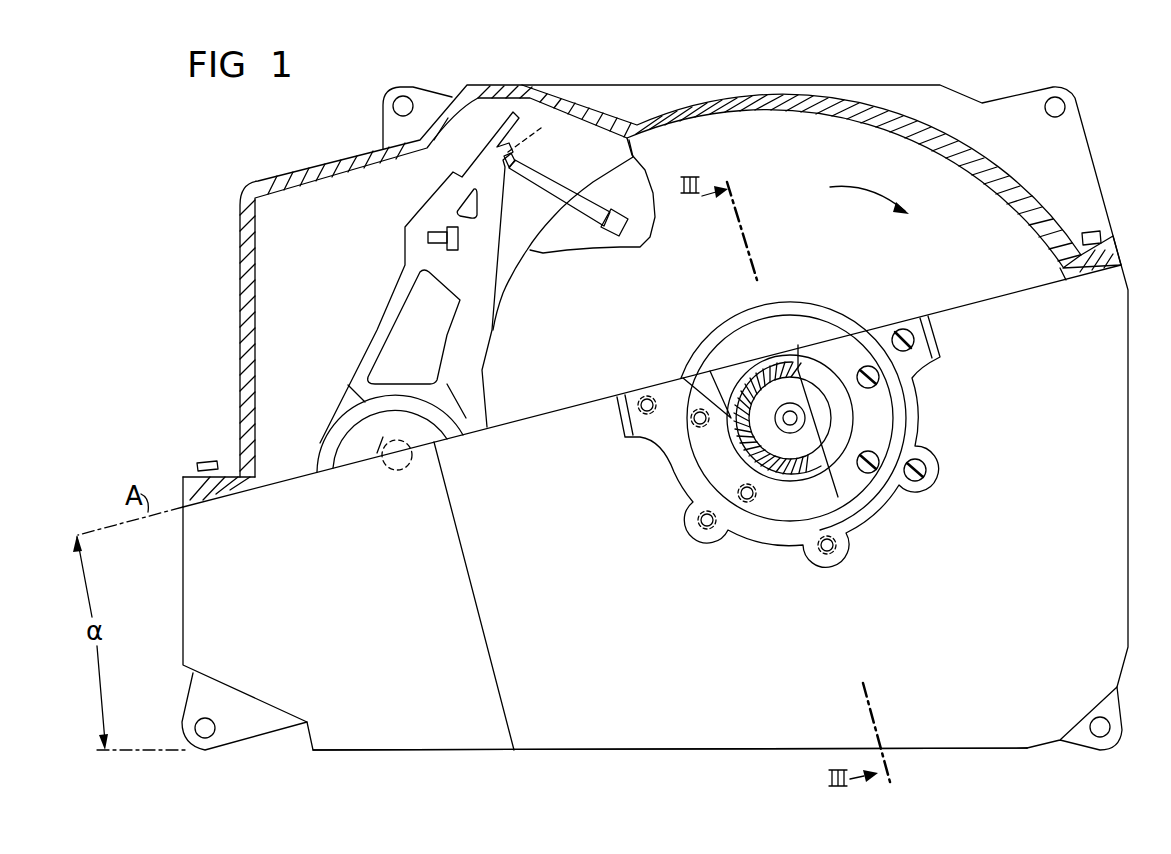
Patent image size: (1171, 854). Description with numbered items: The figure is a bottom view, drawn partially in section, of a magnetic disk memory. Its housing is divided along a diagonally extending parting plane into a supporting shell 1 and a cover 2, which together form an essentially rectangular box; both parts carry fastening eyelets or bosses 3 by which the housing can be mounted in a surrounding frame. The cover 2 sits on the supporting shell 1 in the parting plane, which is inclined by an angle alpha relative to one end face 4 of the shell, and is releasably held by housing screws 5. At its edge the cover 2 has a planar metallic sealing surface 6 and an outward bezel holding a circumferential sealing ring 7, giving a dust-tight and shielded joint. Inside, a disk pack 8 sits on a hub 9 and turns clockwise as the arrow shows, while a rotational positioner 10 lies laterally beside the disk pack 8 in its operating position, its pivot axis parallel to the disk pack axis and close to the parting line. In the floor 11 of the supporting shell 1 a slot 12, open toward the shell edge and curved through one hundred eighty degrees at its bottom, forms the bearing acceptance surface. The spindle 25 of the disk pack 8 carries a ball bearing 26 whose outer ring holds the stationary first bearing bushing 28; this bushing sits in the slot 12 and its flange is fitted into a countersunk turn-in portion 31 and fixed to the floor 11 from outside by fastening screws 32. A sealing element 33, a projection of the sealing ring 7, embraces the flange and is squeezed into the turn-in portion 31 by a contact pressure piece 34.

The supporting shell 1 is at (180, 563).
The cover 2 is at (242, 372).
The fastening eyelets or bosses 3 is at (392, 117).
The end face 4 is at (453, 752).
The housing screws 5 is at (213, 462).
The planar metallic sealing surface 6 is at (1080, 267).
The circumferential sealing ring 7 is at (1113, 253).
The disk pack 8 is at (830, 130).
The hub 9 is at (822, 302).
The rotational positioner 10 is at (383, 317).
The floor of the supporting shell 11 is at (218, 608).
The slot 12 is at (723, 377).
The spindle 25 is at (782, 427).
The ball bearing 26 is at (800, 450).
The first bearing bushing 28 is at (733, 427).
The turn-in portion 31 is at (688, 510).
The fastening screws 32 is at (880, 488).
The sealing element 33 is at (693, 477).
The contact pressure piece 34 is at (792, 441).